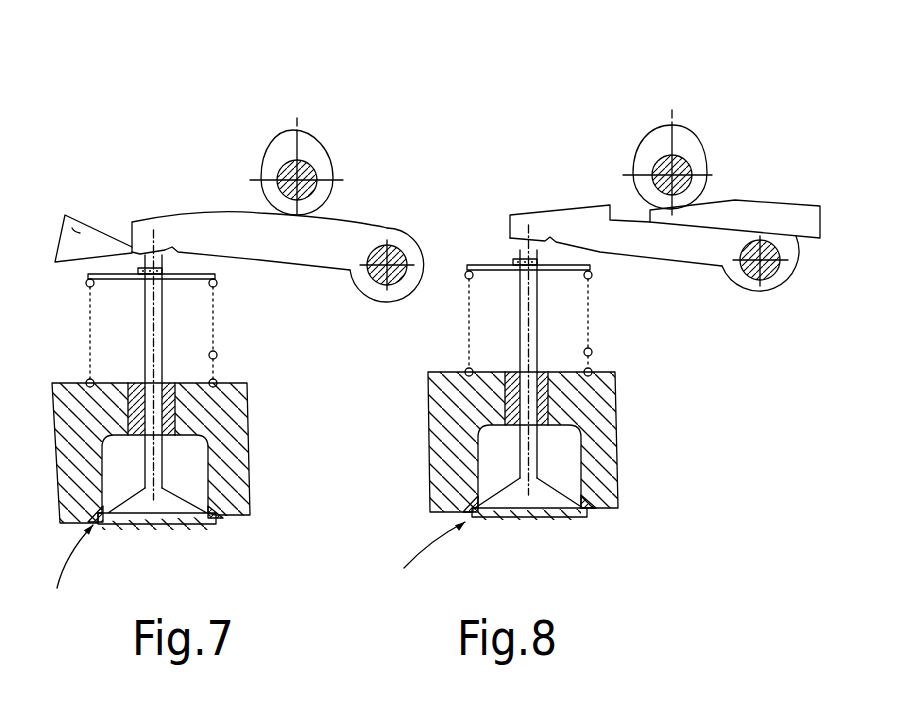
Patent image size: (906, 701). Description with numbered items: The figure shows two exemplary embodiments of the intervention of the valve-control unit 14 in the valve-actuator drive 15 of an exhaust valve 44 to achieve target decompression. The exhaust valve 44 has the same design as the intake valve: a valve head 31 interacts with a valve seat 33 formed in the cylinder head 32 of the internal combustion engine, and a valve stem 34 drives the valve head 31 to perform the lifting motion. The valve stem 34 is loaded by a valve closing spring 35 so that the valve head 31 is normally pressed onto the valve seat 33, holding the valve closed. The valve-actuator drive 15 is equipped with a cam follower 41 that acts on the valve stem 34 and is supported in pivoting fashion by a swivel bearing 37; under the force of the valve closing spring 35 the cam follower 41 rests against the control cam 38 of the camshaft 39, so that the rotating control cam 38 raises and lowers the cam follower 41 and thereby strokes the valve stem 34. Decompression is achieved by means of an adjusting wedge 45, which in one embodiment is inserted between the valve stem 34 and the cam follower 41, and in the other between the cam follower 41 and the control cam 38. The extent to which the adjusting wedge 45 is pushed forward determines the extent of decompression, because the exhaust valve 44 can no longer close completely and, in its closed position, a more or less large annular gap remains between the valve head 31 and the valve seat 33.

In FIG. 7, the valve-control unit 14 is at (65, 264).
In FIG. 8, the valve-control unit 14 is at (790, 204).
In FIG. 7, the valve-actuator drive 15 is at (168, 213).
In FIG. 8, the valve-actuator drive 15 is at (592, 205).
In FIG. 7, the valve head 31 is at (187, 527).
In FIG. 8, the valve head 31 is at (545, 517).
In FIG. 7, the cylinder head 32 is at (225, 462).
In FIG. 8, the cylinder head 32 is at (600, 437).
In FIG. 7, the valve seat 33 is at (222, 518).
In FIG. 8, the valve seat 33 is at (590, 513).
In FIG. 7, the valve stem 34 is at (152, 320).
In FIG. 8, the valve stem 34 is at (527, 322).
In FIG. 7, the valve closing spring 35 is at (216, 356).
In FIG. 8, the valve closing spring 35 is at (591, 352).
In FIG. 7, the swivel bearing 37 is at (392, 235).
In FIG. 8, the swivel bearing 37 is at (760, 298).
In FIG. 7, the control cam 38 is at (305, 140).
In FIG. 8, the control cam 38 is at (683, 140).
In FIG. 7, the camshaft 39 is at (312, 168).
In FIG. 8, the camshaft 39 is at (665, 165).
In FIG. 7, the cam follower 41 is at (222, 213).
In FIG. 8, the cam follower 41 is at (553, 212).
In FIG. 7, the exhaust valve 44 is at (70, 571).
In FIG. 8, the exhaust valve 44 is at (421, 558).
In FIG. 7, the adjusting wedge 45 is at (87, 220).
In FIG. 8, the adjusting wedge 45 is at (727, 217).